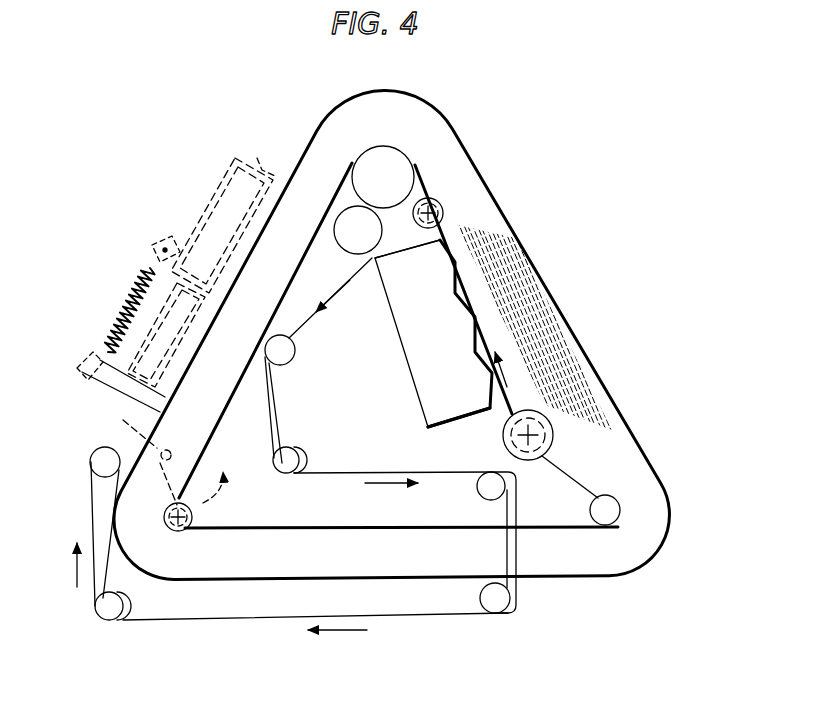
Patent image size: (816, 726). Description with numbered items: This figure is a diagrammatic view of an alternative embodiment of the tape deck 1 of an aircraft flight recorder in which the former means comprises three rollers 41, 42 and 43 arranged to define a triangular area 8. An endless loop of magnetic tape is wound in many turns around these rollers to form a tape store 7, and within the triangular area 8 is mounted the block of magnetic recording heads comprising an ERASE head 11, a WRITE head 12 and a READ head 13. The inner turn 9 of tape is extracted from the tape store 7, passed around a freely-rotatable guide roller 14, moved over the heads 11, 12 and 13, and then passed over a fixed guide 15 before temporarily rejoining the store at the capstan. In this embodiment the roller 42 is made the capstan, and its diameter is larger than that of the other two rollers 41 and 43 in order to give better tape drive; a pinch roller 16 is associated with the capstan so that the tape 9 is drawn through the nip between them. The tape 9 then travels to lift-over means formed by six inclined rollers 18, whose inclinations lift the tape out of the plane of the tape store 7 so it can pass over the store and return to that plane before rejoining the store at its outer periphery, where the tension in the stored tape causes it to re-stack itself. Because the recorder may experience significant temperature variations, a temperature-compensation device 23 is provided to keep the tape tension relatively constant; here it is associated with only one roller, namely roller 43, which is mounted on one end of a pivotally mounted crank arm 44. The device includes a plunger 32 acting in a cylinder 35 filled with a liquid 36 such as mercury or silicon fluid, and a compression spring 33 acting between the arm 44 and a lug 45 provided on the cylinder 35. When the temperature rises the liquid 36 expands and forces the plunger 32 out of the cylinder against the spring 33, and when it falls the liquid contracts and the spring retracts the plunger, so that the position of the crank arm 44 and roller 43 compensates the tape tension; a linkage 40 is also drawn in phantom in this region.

The tape deck 1 is at (548, 265).
The tape store 7 is at (560, 340).
The triangular area 8 is at (440, 505).
The inner turn of tape 9 is at (198, 618).
The ERASE head 11 is at (449, 400).
The WRITE head 12 is at (427, 345).
The READ head 13 is at (408, 284).
The guide roller 14 is at (536, 430).
The fixed guide 15 is at (432, 212).
The pinch roller 16 is at (345, 240).
The inclined rollers 18 is at (91, 462).
The temperature-compensation device 23 is at (146, 236).
The plunger 32 is at (110, 316).
The compression spring 33 is at (130, 287).
The cylinder 35 is at (228, 176).
The liquid 36 is at (258, 156).
The linkage (phantom) 40 is at (128, 441).
The roller 41 is at (590, 510).
The capstan roller 42 is at (395, 170).
The roller 43 is at (192, 517).
The crank arm 44 is at (182, 495).
The lug 45 is at (163, 238).